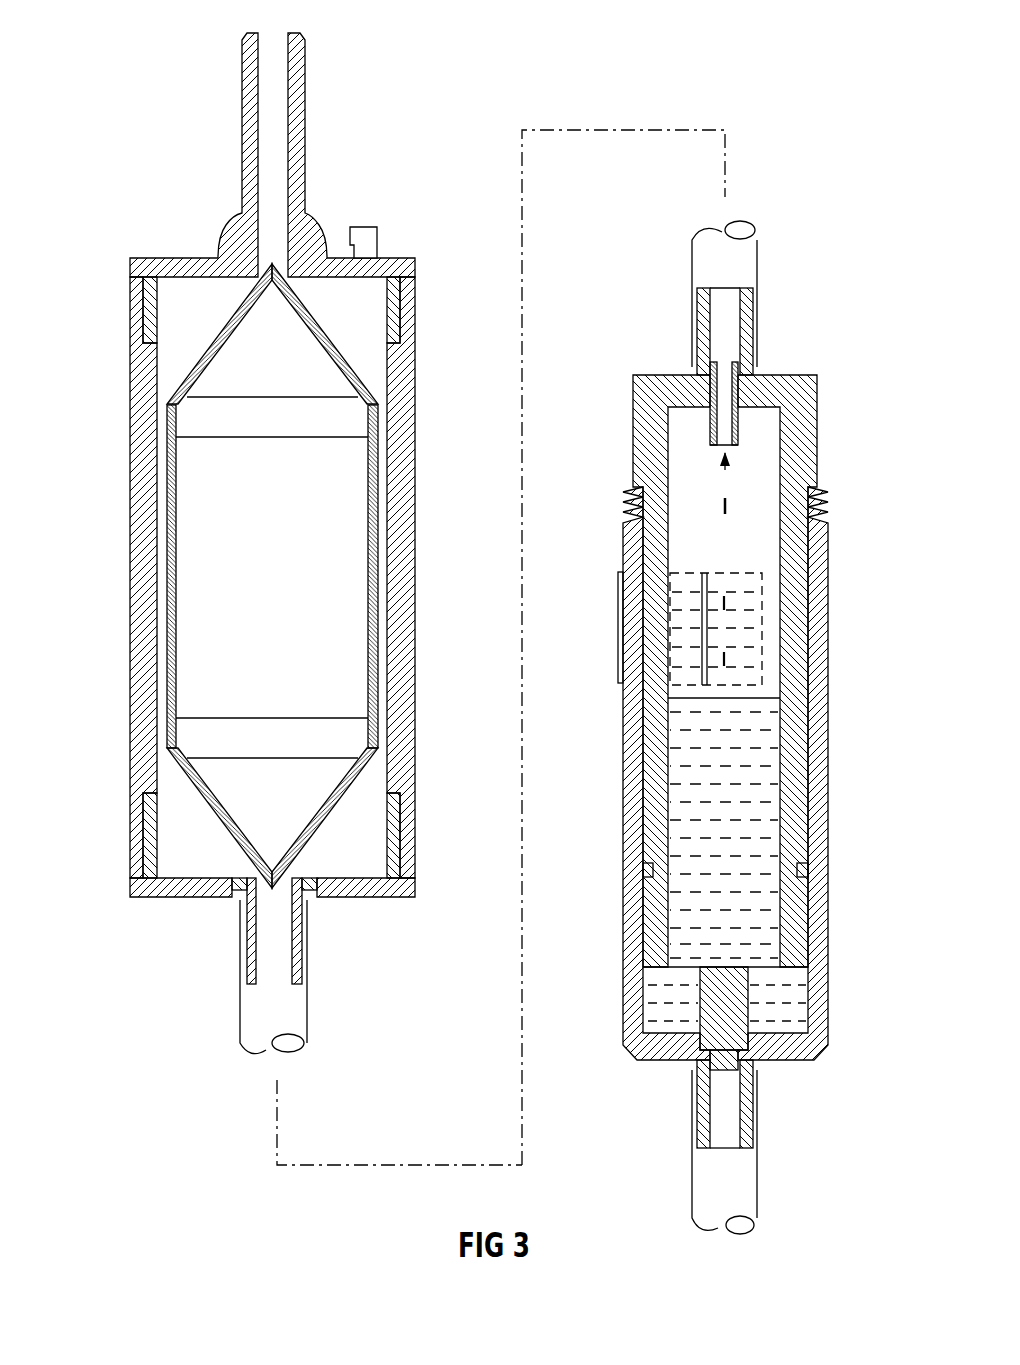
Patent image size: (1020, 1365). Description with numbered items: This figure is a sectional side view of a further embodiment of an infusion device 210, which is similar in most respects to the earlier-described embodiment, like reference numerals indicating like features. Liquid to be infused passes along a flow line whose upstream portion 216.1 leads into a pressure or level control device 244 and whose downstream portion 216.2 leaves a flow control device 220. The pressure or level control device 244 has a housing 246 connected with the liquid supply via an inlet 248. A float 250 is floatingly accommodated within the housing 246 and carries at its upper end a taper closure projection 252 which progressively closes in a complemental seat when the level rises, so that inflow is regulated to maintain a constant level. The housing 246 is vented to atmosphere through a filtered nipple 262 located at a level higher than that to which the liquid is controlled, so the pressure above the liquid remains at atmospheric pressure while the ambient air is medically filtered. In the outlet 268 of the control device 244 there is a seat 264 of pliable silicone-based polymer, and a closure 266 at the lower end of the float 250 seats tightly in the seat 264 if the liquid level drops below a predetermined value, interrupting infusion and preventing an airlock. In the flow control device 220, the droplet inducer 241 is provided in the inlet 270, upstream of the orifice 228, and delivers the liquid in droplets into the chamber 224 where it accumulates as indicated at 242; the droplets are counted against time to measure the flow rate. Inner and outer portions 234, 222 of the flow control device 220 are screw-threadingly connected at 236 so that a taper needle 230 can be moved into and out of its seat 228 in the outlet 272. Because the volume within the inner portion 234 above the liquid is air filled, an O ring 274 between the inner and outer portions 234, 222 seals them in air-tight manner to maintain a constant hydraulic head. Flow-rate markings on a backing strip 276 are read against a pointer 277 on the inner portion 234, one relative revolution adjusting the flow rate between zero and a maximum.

The infusion device 210 is at (613, 98).
The first tube 216.1 is at (257, 1008).
The second tube 216.2 is at (733, 1183).
The flow control device 220 is at (582, 590).
The outer portion 222 is at (640, 815).
The upper housing part 224 is at (757, 508).
The orifice 228 is at (748, 1063).
The taper needle 230 is at (717, 1048).
The inner portion 234 is at (643, 418).
The screw threaded connection 236 is at (624, 501).
The droplet inducer 241 is at (740, 422).
The desiccant fill 242 is at (765, 752).
The pressure or level control device 244 is at (95, 378).
The housing 246 is at (143, 578).
The inlet pipe 248 is at (242, 122).
The float 250 is at (178, 536).
The upper cone 252 is at (257, 282).
The filtered nipple 262 is at (366, 232).
The seat 264 is at (235, 896).
The closure 266 is at (245, 853).
The outlet 268 is at (297, 912).
The inlet fitting 270 is at (703, 318).
The outlet 272 is at (700, 1120).
The O ring 274 is at (645, 870).
The backing strip 276 is at (752, 640).
The pointer 277 is at (707, 595).